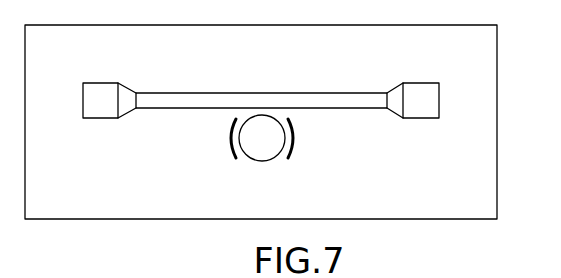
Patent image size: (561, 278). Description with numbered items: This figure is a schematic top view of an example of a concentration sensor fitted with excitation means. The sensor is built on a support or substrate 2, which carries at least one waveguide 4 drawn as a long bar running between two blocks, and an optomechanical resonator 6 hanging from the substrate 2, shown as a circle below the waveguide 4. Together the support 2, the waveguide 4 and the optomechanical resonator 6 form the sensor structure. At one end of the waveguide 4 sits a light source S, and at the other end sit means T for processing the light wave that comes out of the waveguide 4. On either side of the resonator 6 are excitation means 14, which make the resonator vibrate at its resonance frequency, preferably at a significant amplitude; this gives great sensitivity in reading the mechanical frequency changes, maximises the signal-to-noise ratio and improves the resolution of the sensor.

The support or substrate 2 is at (492, 147).
The waveguide 4 is at (311, 82).
The optomechanical resonator 6 is at (249, 165).
The excitation means 14 is at (230, 136).
The light source S is at (97, 110).
The means for processing the light wave T is at (423, 108).